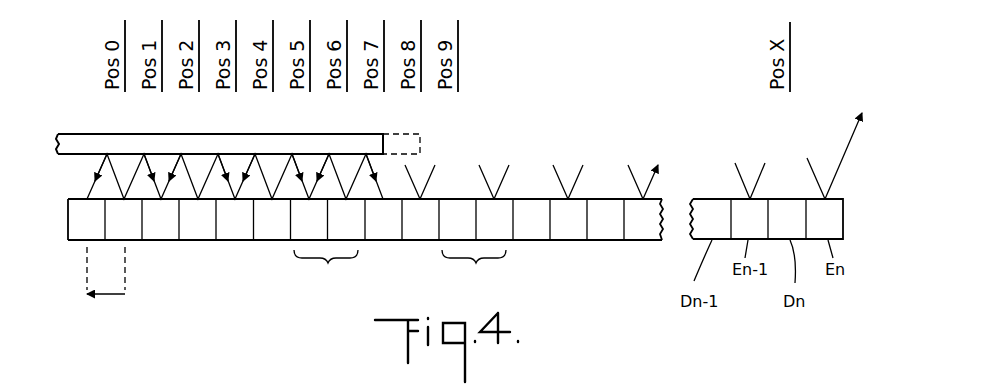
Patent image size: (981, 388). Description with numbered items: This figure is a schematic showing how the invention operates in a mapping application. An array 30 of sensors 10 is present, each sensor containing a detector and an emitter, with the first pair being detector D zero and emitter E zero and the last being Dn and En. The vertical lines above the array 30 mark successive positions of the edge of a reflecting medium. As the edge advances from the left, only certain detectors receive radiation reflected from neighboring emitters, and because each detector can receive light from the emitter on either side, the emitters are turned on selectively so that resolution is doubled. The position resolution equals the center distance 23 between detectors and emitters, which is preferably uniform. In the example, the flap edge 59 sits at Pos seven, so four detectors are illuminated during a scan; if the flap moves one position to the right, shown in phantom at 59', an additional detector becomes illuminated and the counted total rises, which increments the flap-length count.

The flap edge 59 is at (221, 129).
The flap edge in phantom position 59' is at (429, 129).
The array 30 is at (73, 243).
The sensors 10 is at (400, 270).
The center distance 23 is at (108, 294).